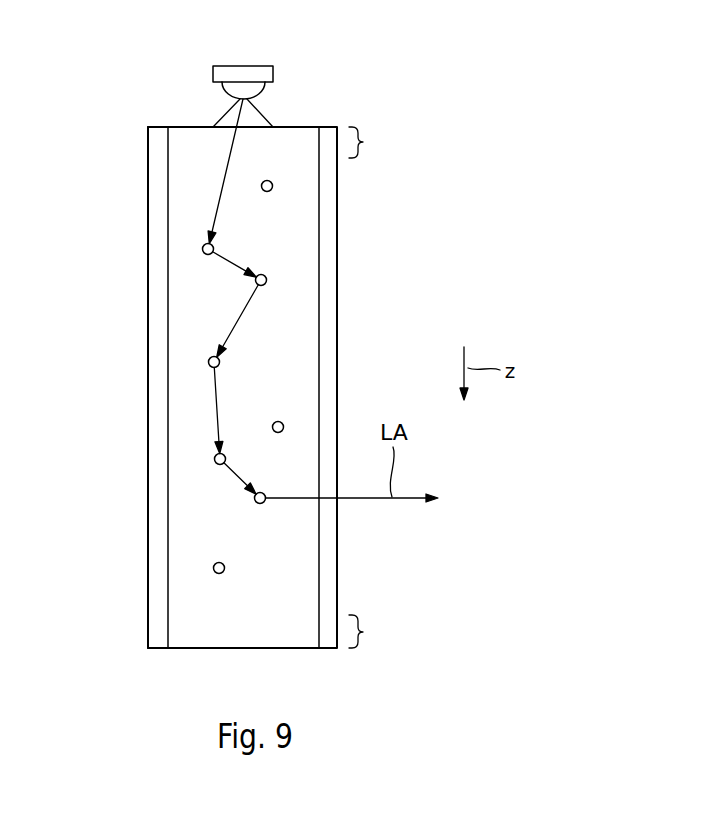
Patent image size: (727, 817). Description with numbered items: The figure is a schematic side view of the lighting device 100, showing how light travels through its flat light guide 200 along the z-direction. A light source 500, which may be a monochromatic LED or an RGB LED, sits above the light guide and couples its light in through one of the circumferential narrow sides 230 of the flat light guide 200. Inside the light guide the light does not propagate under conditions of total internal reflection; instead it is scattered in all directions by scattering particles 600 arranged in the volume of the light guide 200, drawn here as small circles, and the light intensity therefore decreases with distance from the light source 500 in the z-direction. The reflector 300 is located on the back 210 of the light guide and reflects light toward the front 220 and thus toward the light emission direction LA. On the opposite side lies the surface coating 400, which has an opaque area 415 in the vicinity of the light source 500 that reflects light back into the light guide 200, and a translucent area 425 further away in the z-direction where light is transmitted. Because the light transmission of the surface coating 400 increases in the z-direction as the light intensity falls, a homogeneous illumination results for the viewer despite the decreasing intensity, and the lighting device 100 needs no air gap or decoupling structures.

The lighting device 100 is at (495, 141).
The flat light guide 200 is at (232, 398).
The back 210 is at (167, 387).
The front 220 is at (328, 388).
The circumferential narrow side 230 is at (300, 127).
The reflector 300 is at (158, 266).
The surface coating 400 is at (351, 255).
The opaque area 415 is at (365, 142).
The translucent area 425 is at (365, 632).
The light source 500 is at (243, 75).
The scattering particles 600 is at (208, 256).